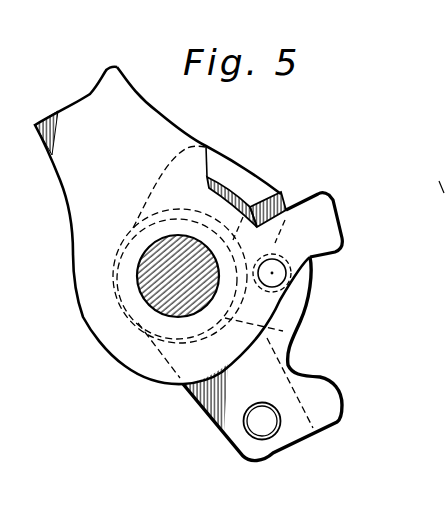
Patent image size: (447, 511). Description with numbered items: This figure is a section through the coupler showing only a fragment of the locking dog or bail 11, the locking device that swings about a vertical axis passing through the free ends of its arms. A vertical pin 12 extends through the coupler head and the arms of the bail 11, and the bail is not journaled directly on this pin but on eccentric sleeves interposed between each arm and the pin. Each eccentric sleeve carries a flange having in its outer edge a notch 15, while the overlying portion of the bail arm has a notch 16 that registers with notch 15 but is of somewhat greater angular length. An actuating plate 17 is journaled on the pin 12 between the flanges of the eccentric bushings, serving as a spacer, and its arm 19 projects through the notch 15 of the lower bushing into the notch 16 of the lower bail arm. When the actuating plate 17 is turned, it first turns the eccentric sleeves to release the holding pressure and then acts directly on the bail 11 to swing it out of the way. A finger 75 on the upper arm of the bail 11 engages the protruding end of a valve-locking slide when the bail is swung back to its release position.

The bail 11 is at (98, 215).
The vertical pin 12 is at (163, 288).
The notch 15 is at (262, 198).
The notch 16 is at (213, 162).
The actuating plate 17 is at (223, 397).
The arm 19 is at (242, 175).
The finger 75 is at (325, 216).